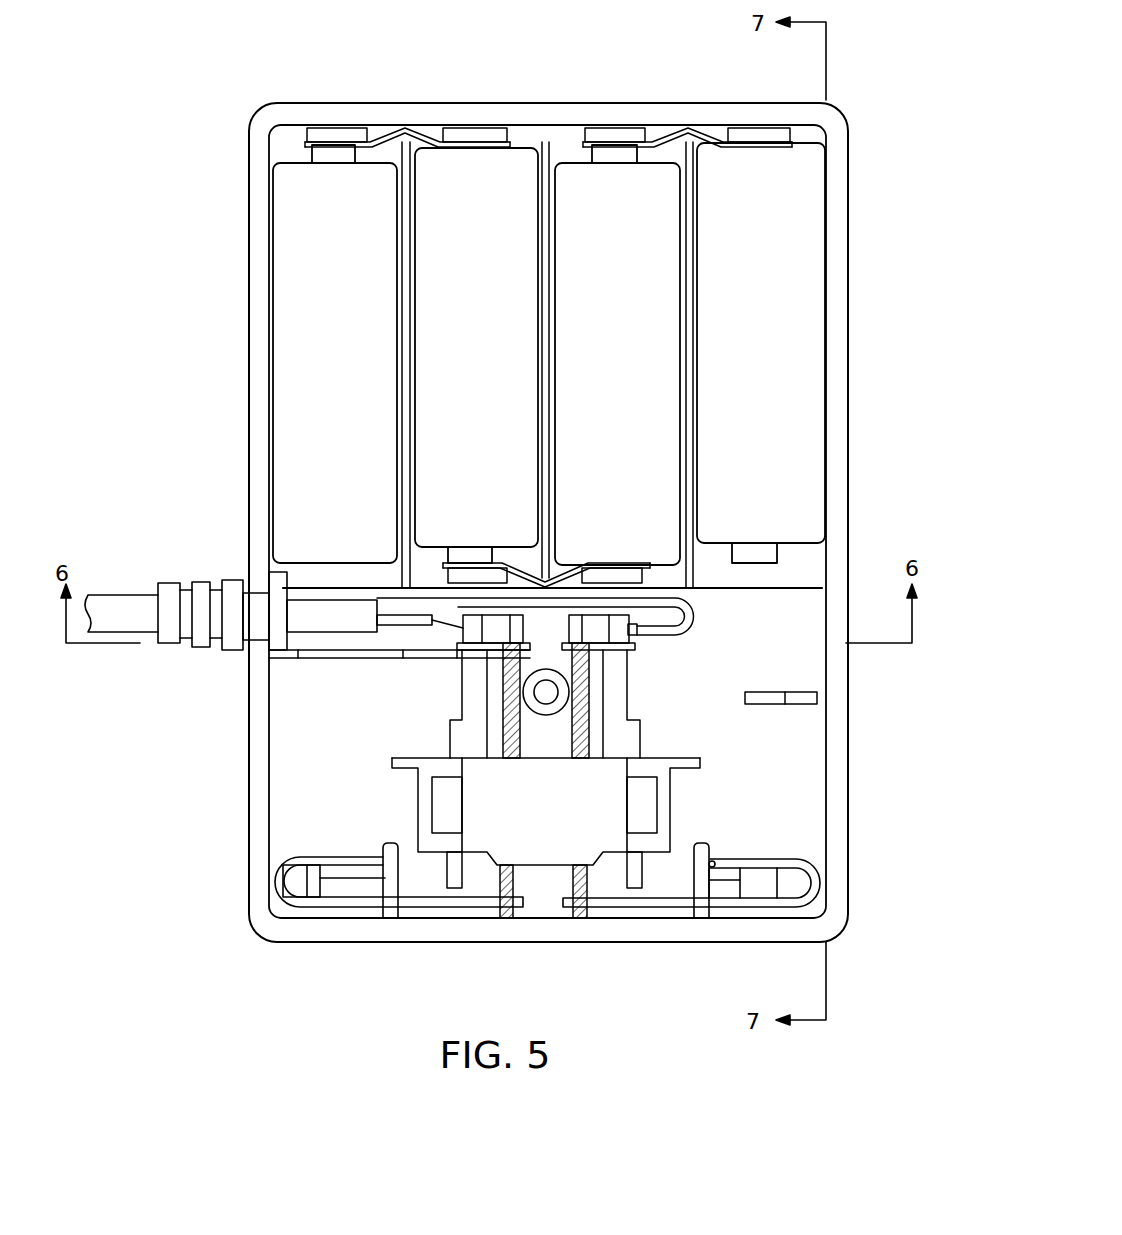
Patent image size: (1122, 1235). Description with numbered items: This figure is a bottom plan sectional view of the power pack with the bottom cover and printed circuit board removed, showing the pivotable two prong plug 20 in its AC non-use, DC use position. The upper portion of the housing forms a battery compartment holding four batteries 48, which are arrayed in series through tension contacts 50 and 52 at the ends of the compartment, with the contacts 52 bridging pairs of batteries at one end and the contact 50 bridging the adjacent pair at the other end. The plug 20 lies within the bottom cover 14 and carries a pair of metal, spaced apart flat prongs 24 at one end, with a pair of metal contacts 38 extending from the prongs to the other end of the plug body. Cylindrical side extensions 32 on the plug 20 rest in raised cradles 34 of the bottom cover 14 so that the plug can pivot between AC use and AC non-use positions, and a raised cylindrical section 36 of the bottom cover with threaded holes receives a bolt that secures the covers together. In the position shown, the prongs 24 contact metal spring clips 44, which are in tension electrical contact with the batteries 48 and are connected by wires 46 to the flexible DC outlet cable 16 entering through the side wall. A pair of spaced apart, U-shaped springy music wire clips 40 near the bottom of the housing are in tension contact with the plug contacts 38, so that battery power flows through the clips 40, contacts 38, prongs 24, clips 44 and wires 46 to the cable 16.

The bottom cover 14 is at (625, 930).
The flexible DC outlet cable 16 is at (135, 608).
The two prong plug 20 is at (546, 811).
The contact prongs 24 is at (520, 738).
The cylindrical side extensions 32 is at (450, 800).
The raised cradles 34 is at (427, 830).
The raised cylindrical section 36 is at (547, 669).
The metal contacts 38 is at (515, 882).
The music wire clips 40 is at (445, 903).
The metal spring clips 44 is at (495, 632).
The wires 46 is at (678, 622).
The batteries 48 is at (549, 354).
The tension contacts 50 is at (503, 564).
The tension contacts 52 is at (410, 130).